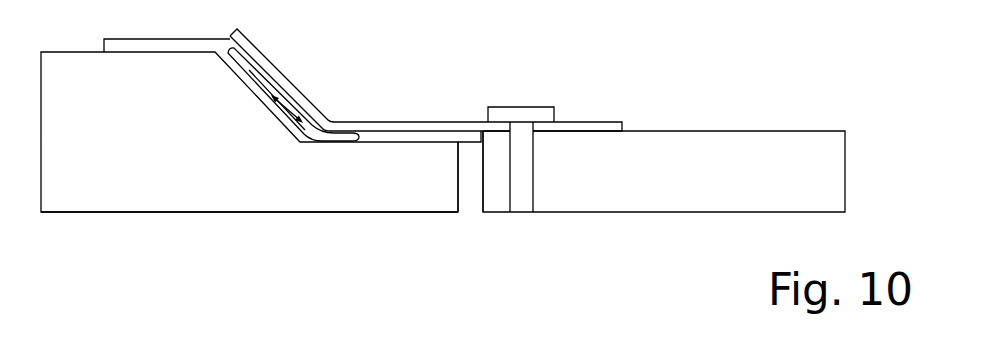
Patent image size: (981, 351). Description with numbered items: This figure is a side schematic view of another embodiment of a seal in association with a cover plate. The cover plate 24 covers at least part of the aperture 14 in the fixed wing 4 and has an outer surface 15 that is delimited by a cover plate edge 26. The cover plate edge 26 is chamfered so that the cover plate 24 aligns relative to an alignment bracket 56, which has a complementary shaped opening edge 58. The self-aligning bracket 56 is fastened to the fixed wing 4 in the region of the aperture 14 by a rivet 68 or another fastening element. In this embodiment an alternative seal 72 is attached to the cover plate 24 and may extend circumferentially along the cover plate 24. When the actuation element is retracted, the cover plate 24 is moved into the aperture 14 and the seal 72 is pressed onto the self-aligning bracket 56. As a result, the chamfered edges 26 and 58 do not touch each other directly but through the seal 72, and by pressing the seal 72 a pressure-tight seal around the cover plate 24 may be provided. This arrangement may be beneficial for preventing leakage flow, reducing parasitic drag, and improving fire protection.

The fixed wing 4 is at (686, 197).
The aperture 14 is at (473, 206).
The outer surface 15 is at (99, 240).
The cover plate 24 is at (350, 197).
The cover plate edge 26 is at (292, 87).
The alignment bracket 56 is at (412, 121).
The opening edge 58 is at (287, 125).
The rivet 68 is at (526, 198).
The seal 72 is at (249, 70).